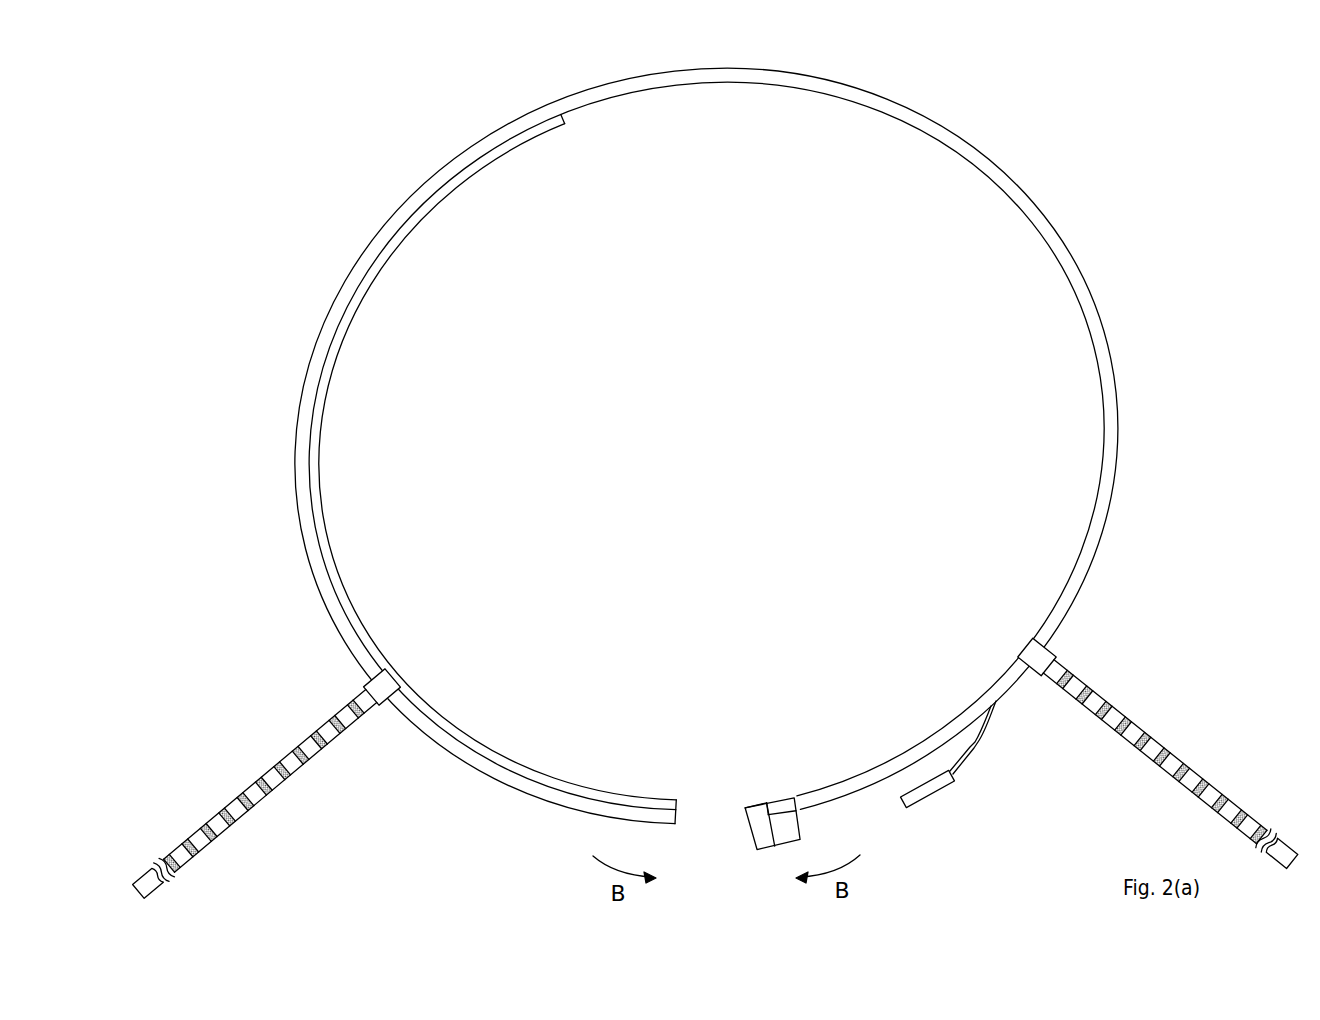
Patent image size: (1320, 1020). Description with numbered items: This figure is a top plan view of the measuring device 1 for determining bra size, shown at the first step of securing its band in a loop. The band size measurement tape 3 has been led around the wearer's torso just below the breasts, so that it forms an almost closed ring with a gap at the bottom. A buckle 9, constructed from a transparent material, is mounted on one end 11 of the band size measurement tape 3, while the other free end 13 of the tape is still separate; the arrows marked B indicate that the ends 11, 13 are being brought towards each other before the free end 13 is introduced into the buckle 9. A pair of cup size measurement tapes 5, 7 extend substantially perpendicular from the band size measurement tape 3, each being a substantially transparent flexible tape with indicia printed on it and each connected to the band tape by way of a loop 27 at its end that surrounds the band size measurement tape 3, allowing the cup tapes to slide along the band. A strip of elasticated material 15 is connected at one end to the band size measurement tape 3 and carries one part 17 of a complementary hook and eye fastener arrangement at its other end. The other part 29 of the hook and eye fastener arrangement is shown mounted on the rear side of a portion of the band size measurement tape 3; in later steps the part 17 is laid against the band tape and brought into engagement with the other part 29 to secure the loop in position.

The measuring device 1 is at (1030, 163).
The band size measurement tape 3 is at (1092, 307).
The cup size measurement tape 5 is at (1246, 767).
The cup size measurement tape 7 is at (181, 814).
The buckle 9 is at (757, 832).
The one end of the band size measuring tape 11 is at (768, 803).
The free end of the band size measuring tape 13 is at (676, 818).
The strip of elasticated material 15 is at (978, 748).
The one part of complementary hook and eye fastener arrangement 17 is at (916, 796).
The loop 27 is at (393, 674).
The other part of complementary hook and eye fastener arrangement 29 is at (496, 753).